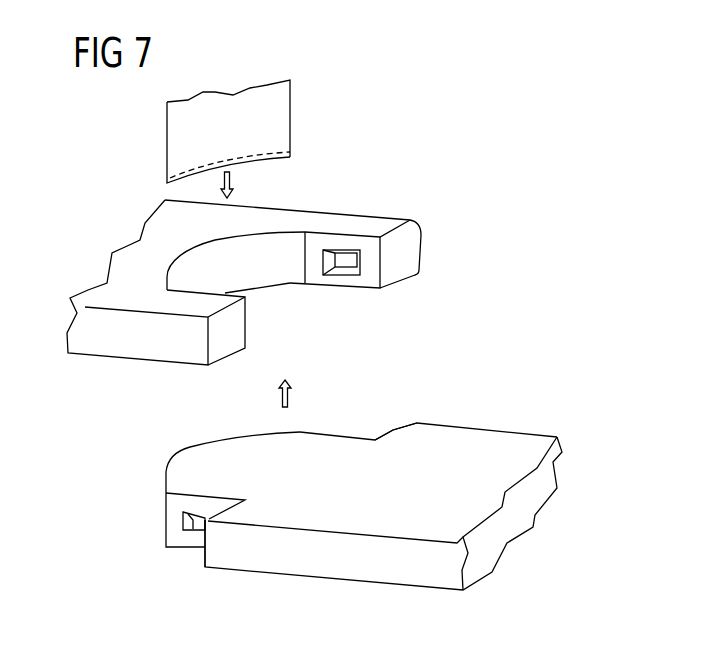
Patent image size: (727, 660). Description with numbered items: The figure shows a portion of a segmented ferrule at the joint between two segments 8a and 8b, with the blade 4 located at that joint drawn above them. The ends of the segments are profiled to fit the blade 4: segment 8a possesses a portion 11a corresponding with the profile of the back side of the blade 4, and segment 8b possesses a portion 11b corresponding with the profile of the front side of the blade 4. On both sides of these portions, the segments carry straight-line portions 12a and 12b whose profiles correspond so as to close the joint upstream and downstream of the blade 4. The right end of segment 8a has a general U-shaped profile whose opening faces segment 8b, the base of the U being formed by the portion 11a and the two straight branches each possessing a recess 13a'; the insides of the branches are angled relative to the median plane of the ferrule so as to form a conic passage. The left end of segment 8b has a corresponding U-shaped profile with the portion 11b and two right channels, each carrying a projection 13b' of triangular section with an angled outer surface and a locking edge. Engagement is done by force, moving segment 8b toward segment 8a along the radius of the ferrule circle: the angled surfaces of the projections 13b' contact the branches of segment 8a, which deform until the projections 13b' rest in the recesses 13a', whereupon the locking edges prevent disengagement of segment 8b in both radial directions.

The blade 4 is at (175, 135).
The segment 8a is at (249, 297).
The segment 8b is at (329, 484).
The portion 11a is at (262, 272).
The portion 11b is at (180, 460).
The portions 12a is at (403, 268).
The portions 12b is at (199, 541).
The recess 13a' is at (356, 224).
The projection 13b' is at (152, 513).